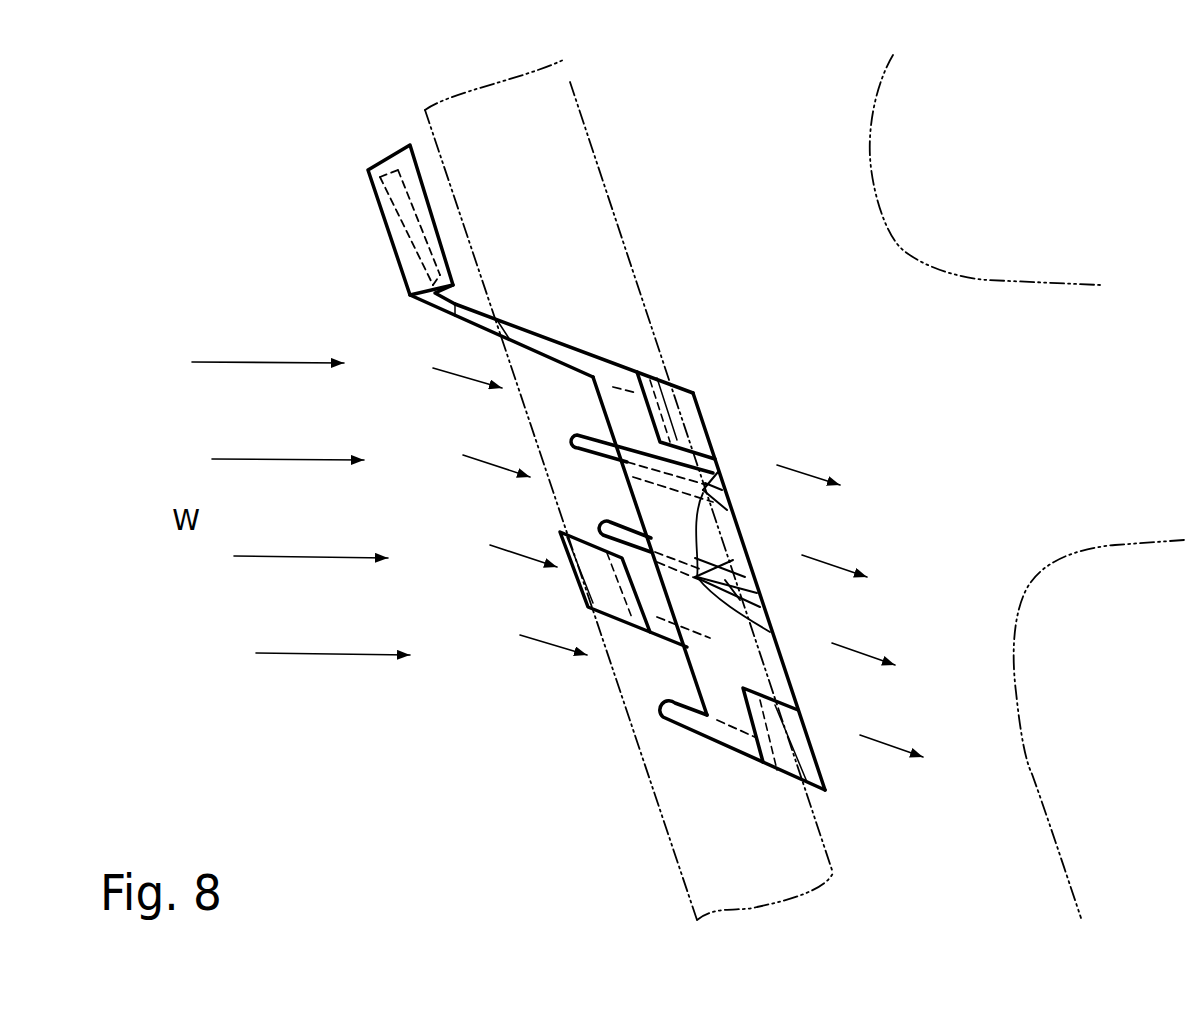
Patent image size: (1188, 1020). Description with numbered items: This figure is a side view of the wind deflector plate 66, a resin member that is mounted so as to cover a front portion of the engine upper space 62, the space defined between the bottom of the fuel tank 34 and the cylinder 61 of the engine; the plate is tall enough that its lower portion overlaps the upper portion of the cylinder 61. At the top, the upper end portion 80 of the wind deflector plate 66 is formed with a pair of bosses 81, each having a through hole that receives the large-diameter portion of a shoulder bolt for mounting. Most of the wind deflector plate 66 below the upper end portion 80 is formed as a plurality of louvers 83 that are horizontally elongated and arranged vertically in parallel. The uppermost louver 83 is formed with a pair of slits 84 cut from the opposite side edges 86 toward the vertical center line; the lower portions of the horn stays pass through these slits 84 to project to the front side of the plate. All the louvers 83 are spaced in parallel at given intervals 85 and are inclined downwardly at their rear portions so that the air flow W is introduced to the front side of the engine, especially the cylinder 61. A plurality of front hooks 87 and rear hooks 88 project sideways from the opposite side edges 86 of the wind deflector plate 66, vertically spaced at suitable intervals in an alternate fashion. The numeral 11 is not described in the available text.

The pillar / strip member 11 is at (665, 815).
The fuel tank 34 is at (988, 280).
The cylinder 61 is at (1115, 552).
The engine upper space 62 is at (1055, 433).
The wind deflector plate 66 is at (386, 268).
The upper end portion 80 is at (389, 157).
The boss 81 is at (390, 238).
The louver 83 is at (590, 460).
The slit 84 is at (474, 328).
The interval 85 is at (732, 543).
The side edge 86 is at (598, 360).
The front hook 87 is at (580, 590).
The rear hook 88 is at (697, 407).